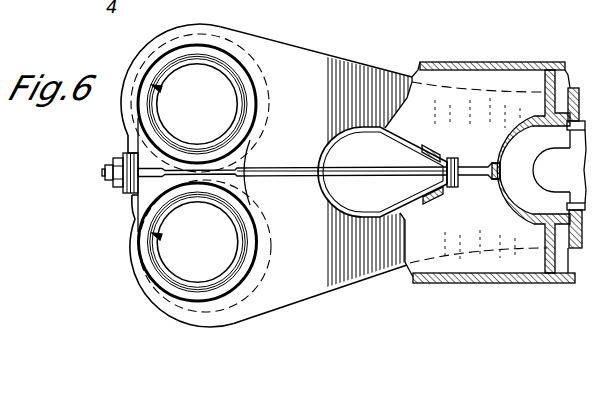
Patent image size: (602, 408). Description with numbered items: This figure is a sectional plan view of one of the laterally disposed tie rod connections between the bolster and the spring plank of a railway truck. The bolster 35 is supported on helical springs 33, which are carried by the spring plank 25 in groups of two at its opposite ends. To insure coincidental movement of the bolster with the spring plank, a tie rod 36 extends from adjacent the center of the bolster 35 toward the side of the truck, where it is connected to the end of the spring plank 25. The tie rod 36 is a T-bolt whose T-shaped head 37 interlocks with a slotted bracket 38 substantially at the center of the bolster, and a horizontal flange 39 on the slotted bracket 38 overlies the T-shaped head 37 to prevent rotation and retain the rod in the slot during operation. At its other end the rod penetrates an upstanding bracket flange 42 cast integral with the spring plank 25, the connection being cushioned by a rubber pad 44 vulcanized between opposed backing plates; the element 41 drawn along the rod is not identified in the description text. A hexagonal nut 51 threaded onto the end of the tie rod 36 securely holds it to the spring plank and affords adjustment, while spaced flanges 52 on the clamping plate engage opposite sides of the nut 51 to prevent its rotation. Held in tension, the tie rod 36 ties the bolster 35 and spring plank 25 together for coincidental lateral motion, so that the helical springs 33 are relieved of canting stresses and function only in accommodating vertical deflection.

The spring plank 25 is at (325, 56).
The helical springs 33 is at (246, 92).
The bolster 35 is at (508, 62).
The tie rod 36 is at (378, 168).
The T-shaped head 37 is at (458, 165).
The slotted bracket 38 is at (442, 153).
The horizontal flange 39 is at (446, 191).
The rod 41 is at (195, 168).
The upstanding bracket flange 42 is at (127, 155).
The rubber pad 44 is at (128, 197).
The nut 51 is at (108, 180).
The spaced flanges 52 is at (115, 161).